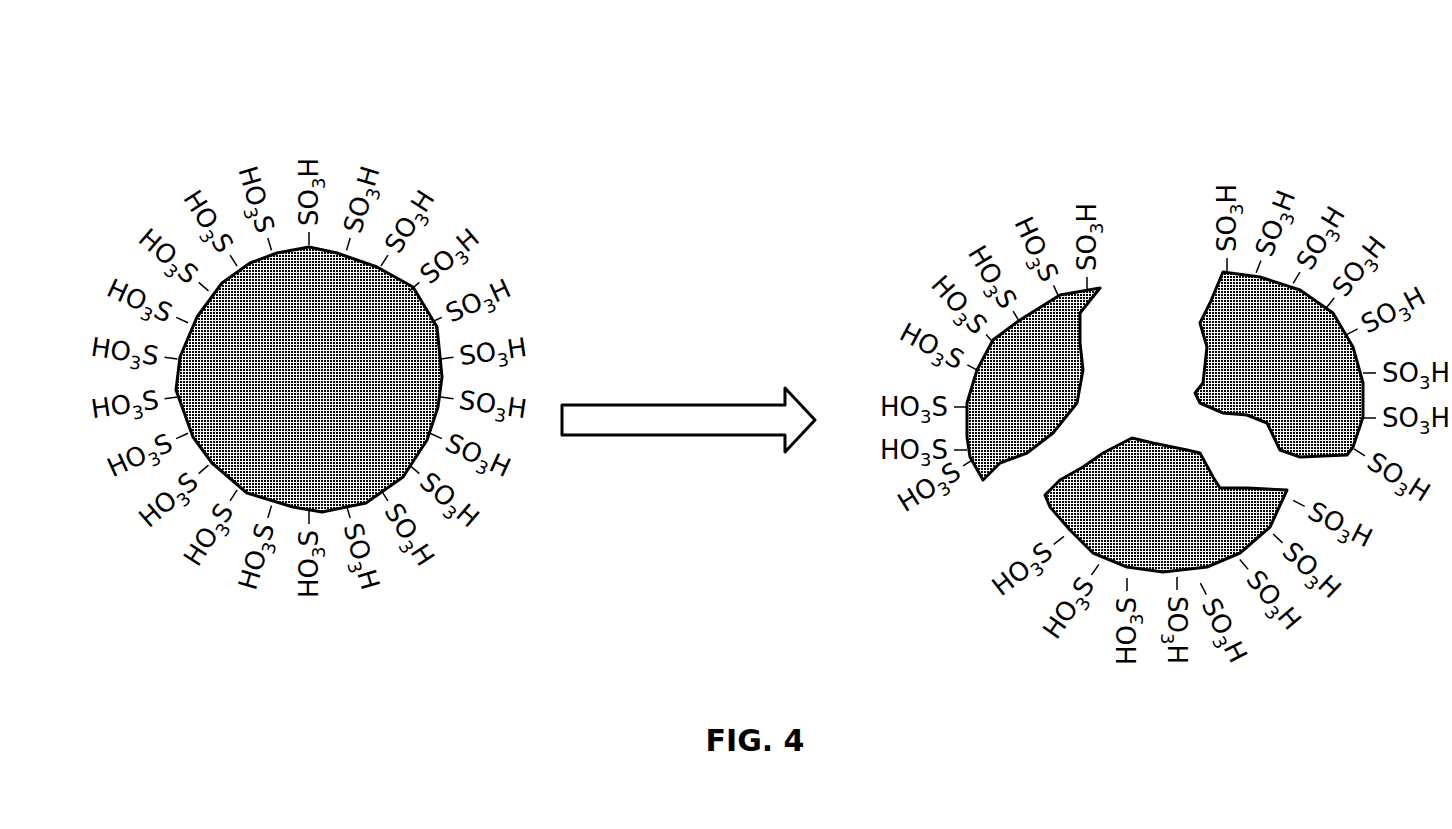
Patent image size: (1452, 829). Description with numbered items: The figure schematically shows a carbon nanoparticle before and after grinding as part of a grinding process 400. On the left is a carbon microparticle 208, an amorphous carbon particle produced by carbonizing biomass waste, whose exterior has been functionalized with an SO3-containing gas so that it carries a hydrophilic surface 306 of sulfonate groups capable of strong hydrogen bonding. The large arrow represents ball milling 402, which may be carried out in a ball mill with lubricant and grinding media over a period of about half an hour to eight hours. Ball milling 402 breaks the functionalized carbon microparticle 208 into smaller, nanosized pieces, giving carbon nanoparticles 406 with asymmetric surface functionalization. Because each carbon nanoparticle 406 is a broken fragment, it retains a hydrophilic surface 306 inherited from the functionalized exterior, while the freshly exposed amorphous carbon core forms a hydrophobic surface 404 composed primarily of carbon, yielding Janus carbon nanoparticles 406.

The carbon microparticles 208 is at (297, 510).
The hydrophilic surface 306 is at (425, 177).
The grinding process 400 is at (613, 85).
The ball milling 402 is at (708, 404).
The hydrophobic surface 404 is at (1190, 336).
The carbon nanoparticles 406 is at (1137, 457).